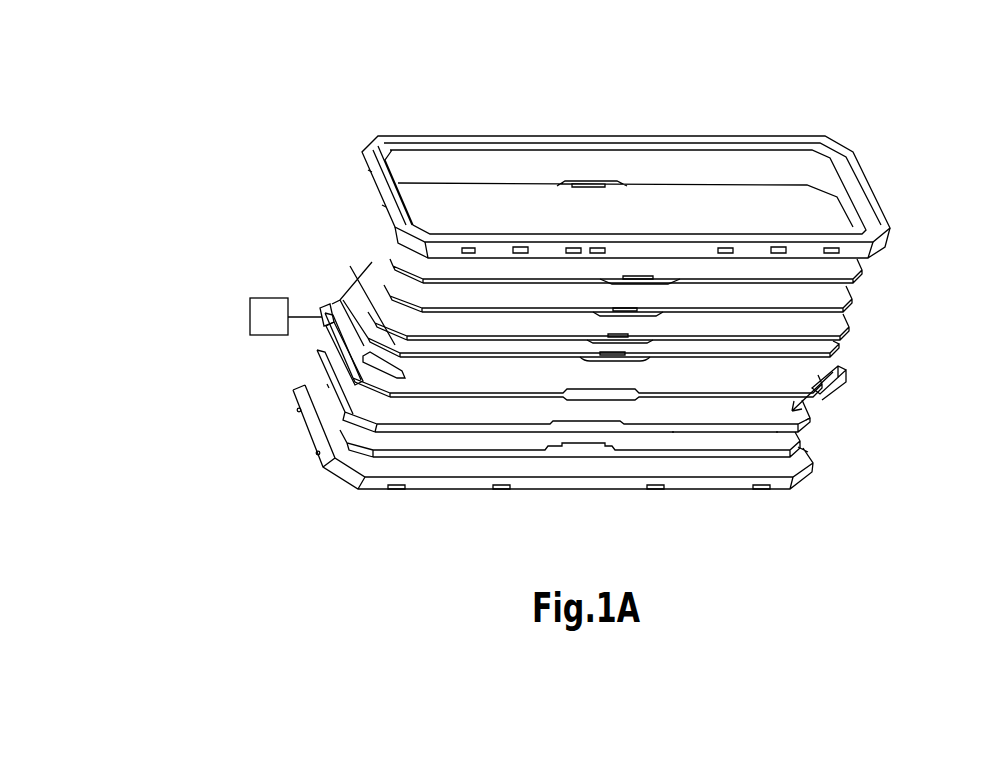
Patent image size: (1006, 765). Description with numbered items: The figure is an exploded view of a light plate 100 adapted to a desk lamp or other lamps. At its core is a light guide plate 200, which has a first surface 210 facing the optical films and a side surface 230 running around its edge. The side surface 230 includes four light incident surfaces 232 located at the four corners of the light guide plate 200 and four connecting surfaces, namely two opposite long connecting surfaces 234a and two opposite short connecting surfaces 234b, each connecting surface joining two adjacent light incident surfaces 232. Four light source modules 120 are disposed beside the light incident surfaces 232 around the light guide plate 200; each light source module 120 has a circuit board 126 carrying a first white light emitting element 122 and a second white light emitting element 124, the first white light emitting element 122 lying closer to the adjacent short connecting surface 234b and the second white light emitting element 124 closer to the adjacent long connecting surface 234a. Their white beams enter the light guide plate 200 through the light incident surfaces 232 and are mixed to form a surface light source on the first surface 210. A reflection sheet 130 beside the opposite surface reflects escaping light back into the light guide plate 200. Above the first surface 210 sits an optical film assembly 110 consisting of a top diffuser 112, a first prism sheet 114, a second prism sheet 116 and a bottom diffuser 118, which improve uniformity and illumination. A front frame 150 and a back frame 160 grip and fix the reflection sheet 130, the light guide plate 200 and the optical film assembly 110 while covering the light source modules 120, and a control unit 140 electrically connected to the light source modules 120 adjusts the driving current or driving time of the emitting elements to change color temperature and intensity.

The light plate 100 is at (885, 569).
The optical film assembly 110 is at (942, 263).
The top diffuser 112 is at (852, 272).
The first prism sheet 114 is at (845, 300).
The second prism sheet 116 is at (838, 327).
The bottom diffuser 118 is at (830, 348).
The light source module 120 is at (320, 294).
The first white light emitting element 122 is at (326, 312).
The second white light emitting element 124 is at (334, 302).
The circuit board 126 is at (320, 310).
The reflection sheet 130 is at (812, 438).
The control unit 140 is at (250, 316).
The front frame 150 is at (396, 137).
The back frame 160 is at (350, 477).
The light guide plate 200 is at (534, 439).
The first surface 210 is at (806, 374).
The side surface 230 is at (783, 446).
The light incident surface 232 is at (820, 424).
The long connecting surface 234a is at (679, 446).
The short connecting surface 234b is at (316, 388).